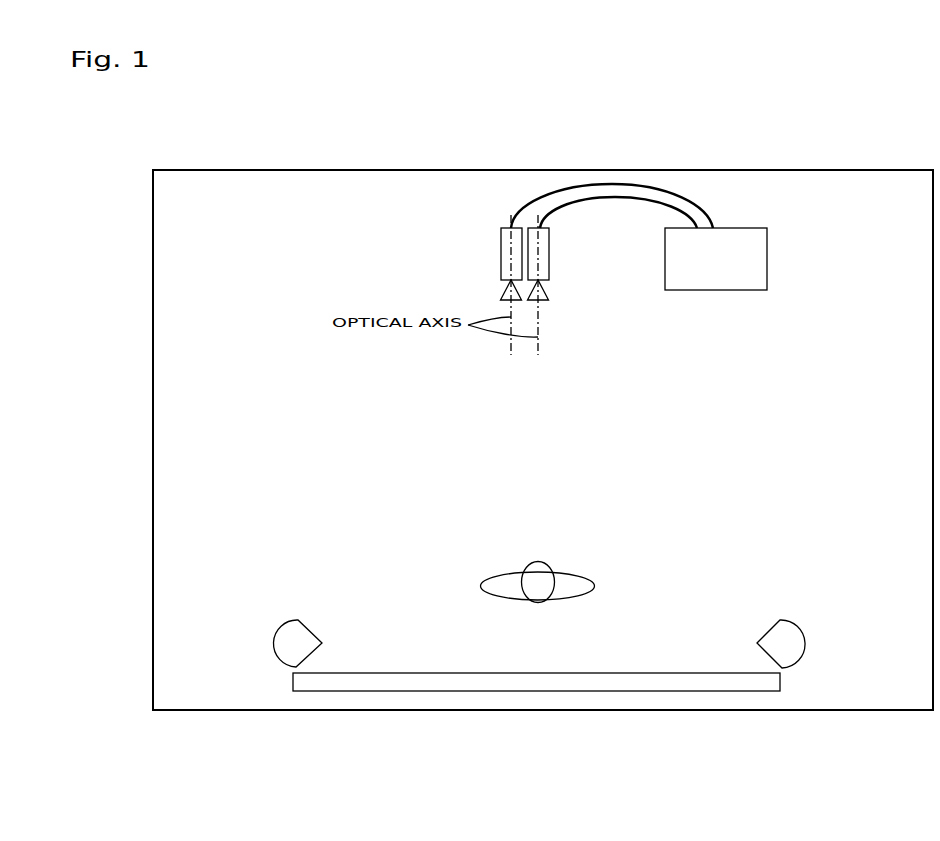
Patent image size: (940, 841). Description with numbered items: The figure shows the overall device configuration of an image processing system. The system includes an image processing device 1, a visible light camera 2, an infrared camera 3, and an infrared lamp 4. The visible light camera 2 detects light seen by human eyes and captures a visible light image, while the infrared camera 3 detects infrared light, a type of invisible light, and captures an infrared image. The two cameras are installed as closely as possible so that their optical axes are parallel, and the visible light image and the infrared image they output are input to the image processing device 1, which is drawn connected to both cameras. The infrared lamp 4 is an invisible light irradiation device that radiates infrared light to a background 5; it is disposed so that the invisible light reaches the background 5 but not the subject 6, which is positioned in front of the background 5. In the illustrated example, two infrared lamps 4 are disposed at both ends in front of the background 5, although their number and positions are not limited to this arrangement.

The image processing device 1 is at (767, 259).
The visible light camera 2 is at (547, 270).
The infrared camera 3 is at (503, 259).
The infrared lamp 4 is at (292, 621).
The background 5 is at (430, 682).
The subject 6 is at (587, 580).